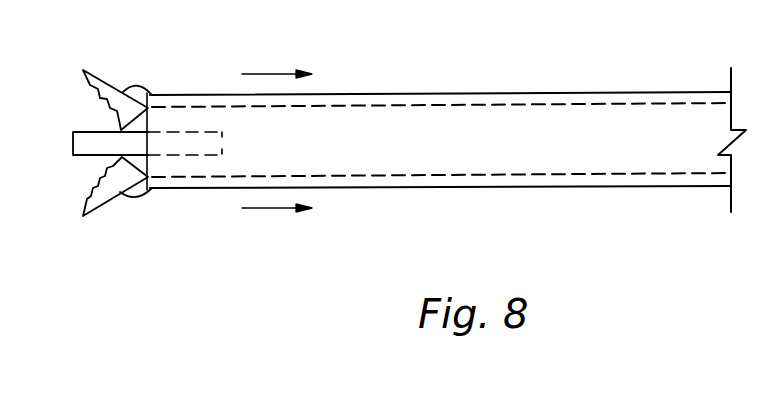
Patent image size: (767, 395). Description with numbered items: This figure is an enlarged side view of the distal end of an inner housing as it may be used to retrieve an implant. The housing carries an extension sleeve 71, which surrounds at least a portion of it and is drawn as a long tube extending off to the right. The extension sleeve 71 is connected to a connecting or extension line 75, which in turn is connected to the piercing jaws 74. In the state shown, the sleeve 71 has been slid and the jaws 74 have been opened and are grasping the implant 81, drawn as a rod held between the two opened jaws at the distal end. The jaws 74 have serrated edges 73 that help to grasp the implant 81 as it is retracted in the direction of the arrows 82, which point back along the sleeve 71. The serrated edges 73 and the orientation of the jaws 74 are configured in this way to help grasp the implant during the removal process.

The extension sleeve 71 is at (517, 92).
The serrated edges 73 is at (100, 97).
The piercing jaws 74 is at (117, 190).
The connecting or extension line 75 is at (124, 92).
The implant 81 is at (223, 148).
The arrows 82 is at (270, 209).